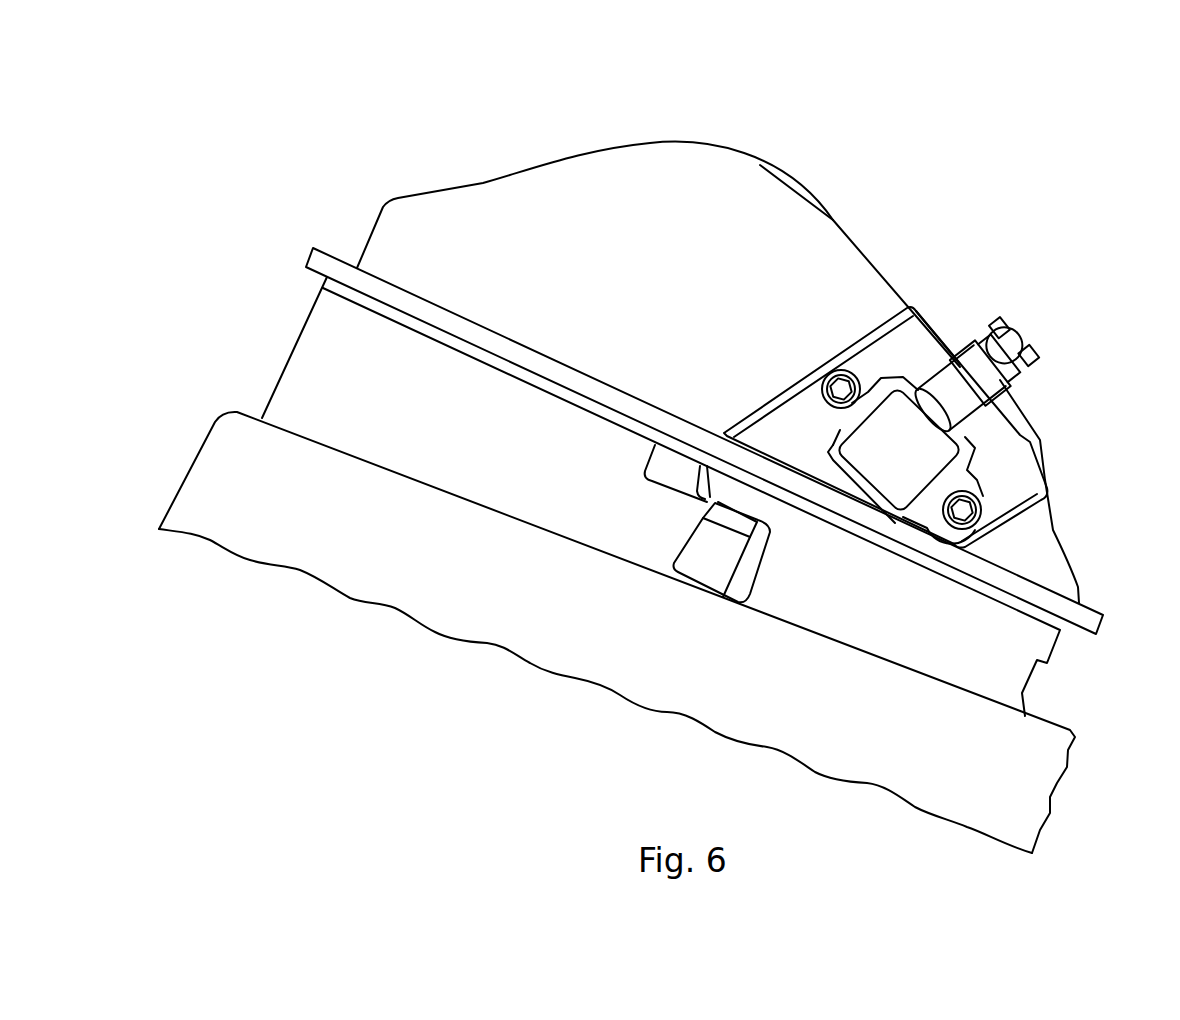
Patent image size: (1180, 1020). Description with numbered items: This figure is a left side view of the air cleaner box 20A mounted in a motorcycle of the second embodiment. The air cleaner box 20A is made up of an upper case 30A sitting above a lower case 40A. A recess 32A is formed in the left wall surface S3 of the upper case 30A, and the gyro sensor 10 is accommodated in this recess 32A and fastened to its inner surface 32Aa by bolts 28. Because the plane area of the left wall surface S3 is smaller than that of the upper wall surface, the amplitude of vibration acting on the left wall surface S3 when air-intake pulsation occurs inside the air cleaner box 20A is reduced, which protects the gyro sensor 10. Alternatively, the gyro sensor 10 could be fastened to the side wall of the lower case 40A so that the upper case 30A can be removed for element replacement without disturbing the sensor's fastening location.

The gyro sensor 10 is at (975, 472).
The air cleaner box 20A is at (574, 155).
The bolt 28 is at (843, 385).
The upper case 30A is at (413, 228).
The recess 32A is at (918, 338).
The inner surface 32Aa is at (933, 330).
The lower case 40A is at (320, 350).
The left wall surface S3 is at (795, 240).